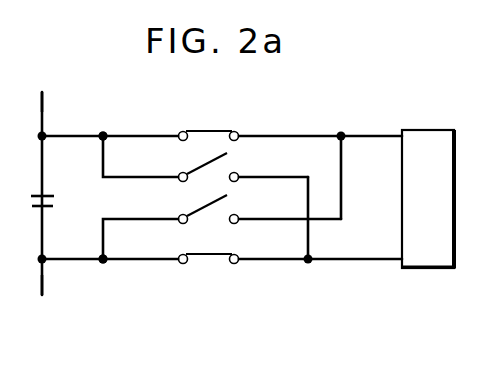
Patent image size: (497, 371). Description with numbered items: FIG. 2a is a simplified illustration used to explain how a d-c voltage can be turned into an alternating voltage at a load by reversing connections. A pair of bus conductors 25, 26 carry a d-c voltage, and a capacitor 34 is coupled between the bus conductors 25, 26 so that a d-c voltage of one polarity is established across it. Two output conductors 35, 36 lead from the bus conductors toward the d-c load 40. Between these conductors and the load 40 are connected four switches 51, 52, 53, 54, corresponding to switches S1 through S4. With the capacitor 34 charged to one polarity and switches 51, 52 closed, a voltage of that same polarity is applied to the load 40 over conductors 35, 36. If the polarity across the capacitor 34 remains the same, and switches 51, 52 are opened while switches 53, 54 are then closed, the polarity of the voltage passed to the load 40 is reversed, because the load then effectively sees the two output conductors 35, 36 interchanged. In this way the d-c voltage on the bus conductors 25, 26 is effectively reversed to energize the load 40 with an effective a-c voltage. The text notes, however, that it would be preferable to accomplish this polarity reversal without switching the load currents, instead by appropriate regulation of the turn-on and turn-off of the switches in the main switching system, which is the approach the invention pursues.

The bus conductor 25 is at (44, 101).
The bus conductor 26 is at (44, 289).
The capacitor 34 is at (60, 205).
The conductor 35 is at (100, 134).
The conductor 36 is at (100, 262).
The d-c load 40 is at (426, 129).
The switch S1 51 is at (189, 128).
The switch S2 52 is at (189, 252).
The switch S3 53 is at (189, 170).
The switch S4 54 is at (189, 211).